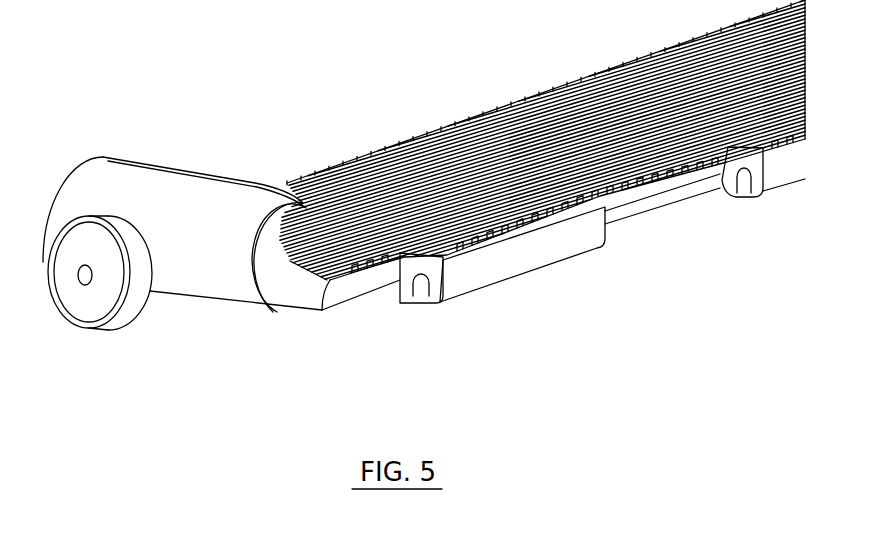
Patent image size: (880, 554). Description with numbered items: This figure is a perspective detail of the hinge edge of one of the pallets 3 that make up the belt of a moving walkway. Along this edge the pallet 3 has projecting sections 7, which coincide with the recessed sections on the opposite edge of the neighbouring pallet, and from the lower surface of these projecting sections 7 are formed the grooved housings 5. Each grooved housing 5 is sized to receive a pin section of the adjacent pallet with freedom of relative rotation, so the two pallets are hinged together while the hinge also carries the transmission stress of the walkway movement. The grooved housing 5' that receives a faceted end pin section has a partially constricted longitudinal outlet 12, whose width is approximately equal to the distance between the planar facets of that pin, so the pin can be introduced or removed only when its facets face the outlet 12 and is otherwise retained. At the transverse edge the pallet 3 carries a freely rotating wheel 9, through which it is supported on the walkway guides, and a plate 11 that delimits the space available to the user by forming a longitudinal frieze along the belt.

The pallet 3 is at (433, 175).
The grooved housing 5 is at (723, 230).
The grooved housing 5' is at (395, 336).
The projecting section 7 is at (457, 283).
The wheel 9 is at (73, 295).
The plate 11 is at (167, 213).
The constricted longitudinal outlet 12 is at (420, 288).